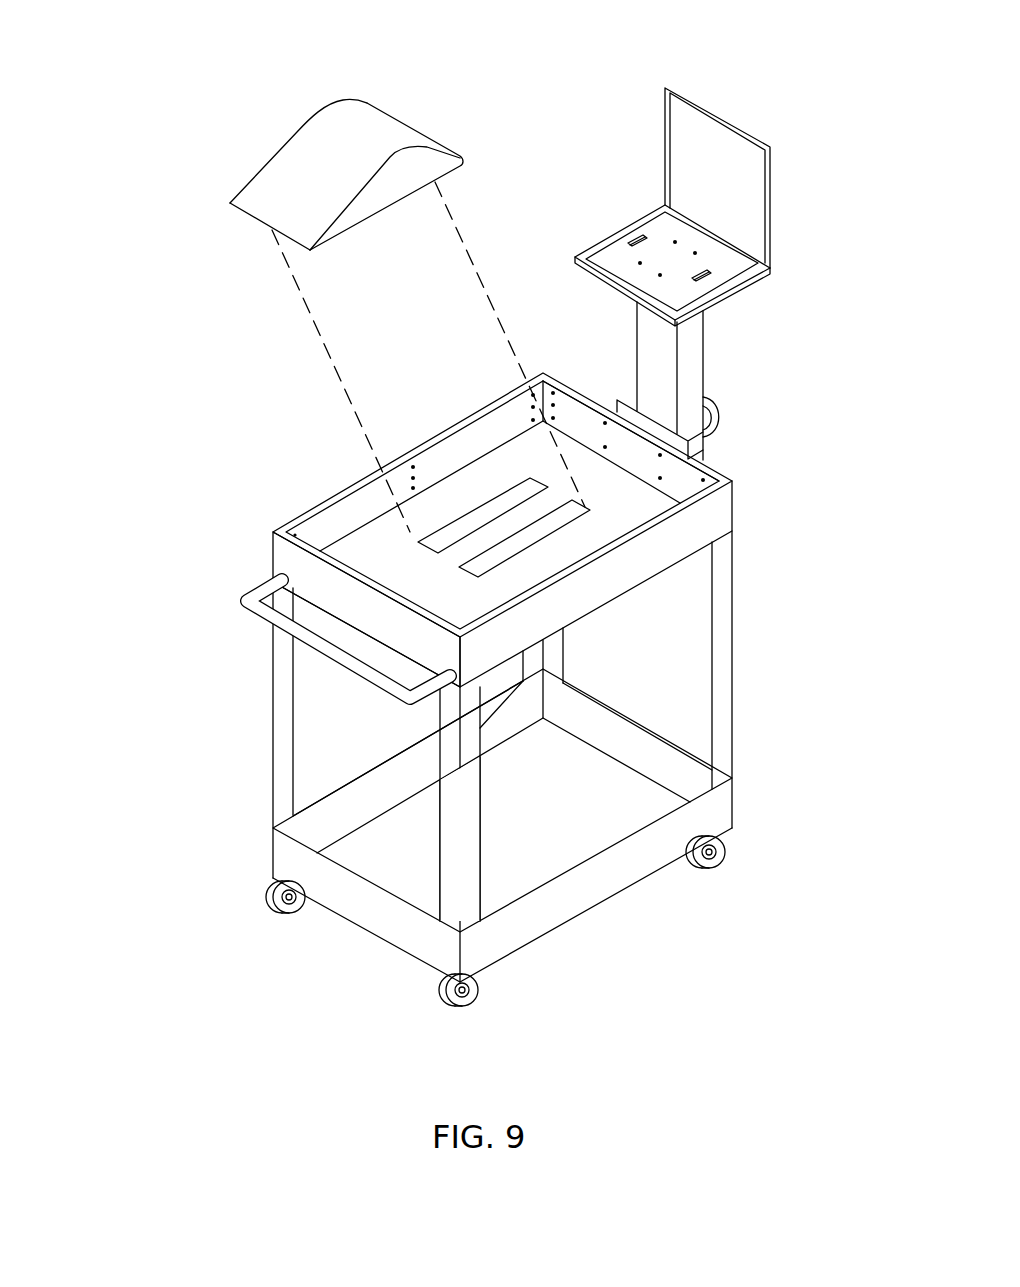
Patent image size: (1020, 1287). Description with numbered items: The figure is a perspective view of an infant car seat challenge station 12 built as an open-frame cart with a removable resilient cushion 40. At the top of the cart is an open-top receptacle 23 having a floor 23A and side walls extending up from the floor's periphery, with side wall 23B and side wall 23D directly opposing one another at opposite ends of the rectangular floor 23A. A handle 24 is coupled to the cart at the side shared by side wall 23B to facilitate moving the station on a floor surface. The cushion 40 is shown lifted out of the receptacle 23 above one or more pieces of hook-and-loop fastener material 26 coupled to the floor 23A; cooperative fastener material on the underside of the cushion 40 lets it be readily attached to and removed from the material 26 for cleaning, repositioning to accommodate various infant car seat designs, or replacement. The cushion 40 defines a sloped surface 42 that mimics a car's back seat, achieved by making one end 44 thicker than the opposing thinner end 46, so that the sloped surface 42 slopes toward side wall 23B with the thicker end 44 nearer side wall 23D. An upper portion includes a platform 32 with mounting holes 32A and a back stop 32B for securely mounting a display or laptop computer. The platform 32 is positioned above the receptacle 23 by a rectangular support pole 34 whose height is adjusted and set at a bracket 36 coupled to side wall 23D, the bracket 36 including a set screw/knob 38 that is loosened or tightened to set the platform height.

The infant car seat challenge station 12 is at (100, 150).
The open-top receptacle 23 is at (342, 478).
The floor 23A is at (625, 495).
The side wall 23B is at (288, 560).
The side wall 23D is at (575, 413).
The handle 24 is at (240, 613).
The hook-and-loop fastener material 26 is at (540, 532).
The platform 32 is at (582, 273).
The holes 32A is at (633, 237).
The back stop 32B is at (713, 130).
The support pole 34 is at (697, 350).
The bracket 36 is at (703, 452).
The set screw/knob 38 is at (712, 414).
The resilient cushion 40 is at (226, 151).
The sloped surface 42 is at (312, 150).
The thicker end 44 is at (403, 118).
The thinner end 46 is at (242, 216).